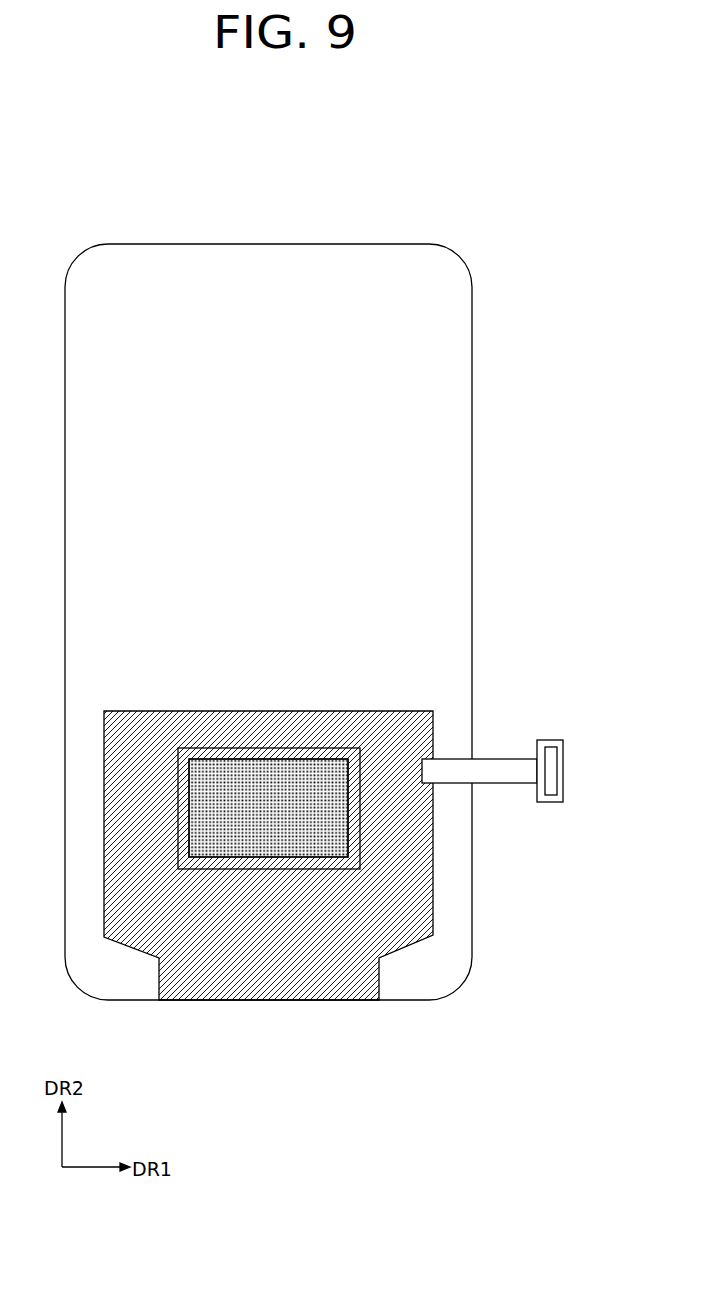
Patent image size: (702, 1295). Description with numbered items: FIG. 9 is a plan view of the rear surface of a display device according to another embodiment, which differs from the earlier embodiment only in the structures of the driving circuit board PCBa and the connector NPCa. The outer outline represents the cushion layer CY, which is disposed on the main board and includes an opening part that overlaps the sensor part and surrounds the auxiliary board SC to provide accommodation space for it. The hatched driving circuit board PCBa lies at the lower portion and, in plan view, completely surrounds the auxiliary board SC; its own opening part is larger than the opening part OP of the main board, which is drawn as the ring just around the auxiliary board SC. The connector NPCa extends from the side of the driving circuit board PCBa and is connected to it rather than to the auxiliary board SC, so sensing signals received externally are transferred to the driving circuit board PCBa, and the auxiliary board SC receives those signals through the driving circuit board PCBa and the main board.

The cushion layer CY is at (457, 632).
The connector NPCa is at (453, 765).
The auxiliary board SC is at (338, 813).
The opening part OP is at (362, 838).
The driving circuit board PCBa is at (423, 900).